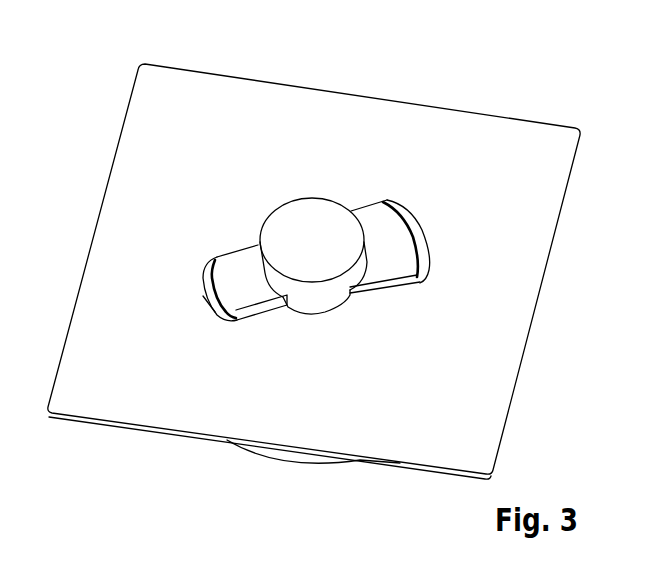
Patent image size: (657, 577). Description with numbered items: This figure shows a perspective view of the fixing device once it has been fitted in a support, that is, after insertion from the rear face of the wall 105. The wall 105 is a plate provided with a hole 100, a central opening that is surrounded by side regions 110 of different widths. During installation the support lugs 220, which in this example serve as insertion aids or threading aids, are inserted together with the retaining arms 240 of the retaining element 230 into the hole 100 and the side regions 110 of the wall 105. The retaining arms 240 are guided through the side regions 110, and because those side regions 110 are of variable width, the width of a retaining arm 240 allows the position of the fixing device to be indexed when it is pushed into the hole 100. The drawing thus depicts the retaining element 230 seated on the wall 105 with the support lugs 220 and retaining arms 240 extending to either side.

The hole 100 is at (312, 276).
The wall 105 is at (475, 125).
The side regions 110 is at (257, 335).
The support lugs 220 is at (233, 283).
The retaining element 230 is at (313, 212).
The retaining arms 240 is at (203, 296).